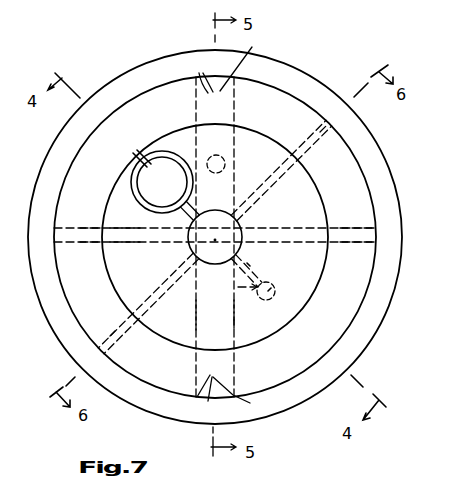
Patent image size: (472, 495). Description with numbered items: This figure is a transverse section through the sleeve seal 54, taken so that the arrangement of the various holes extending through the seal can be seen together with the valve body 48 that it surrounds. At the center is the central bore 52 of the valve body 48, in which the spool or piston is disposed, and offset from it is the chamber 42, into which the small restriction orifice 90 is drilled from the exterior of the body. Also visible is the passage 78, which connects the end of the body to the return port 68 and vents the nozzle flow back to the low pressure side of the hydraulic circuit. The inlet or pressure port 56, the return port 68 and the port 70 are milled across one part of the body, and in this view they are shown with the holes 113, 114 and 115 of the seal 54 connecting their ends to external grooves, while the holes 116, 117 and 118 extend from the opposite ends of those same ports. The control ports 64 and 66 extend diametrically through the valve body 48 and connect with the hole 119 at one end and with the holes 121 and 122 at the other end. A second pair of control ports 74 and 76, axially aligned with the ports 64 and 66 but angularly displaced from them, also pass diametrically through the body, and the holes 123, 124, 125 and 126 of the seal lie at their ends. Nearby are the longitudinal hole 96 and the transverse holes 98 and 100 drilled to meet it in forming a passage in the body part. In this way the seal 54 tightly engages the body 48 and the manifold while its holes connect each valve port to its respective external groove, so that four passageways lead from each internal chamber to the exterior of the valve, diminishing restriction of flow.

The chamber 42 is at (172, 185).
The valve body 48 is at (324, 295).
The central bore 52 is at (227, 234).
The sleeve seal 54 is at (408, 270).
The inlet or pressure port 56 is at (215, 306).
The control port 64 is at (125, 234).
The control port 66 is at (125, 258).
The return port 68 is at (219, 308).
The port 70 is at (219, 322).
The control port 74 is at (279, 175).
The control port 76 is at (295, 185).
The passage 78 is at (217, 156).
The restriction orifice 90 is at (136, 154).
The longitudinal hole 96 is at (271, 288).
The transverse hole 98 is at (257, 269).
The transverse hole 100 is at (253, 295).
The hole 113 is at (197, 397).
The hole 114 is at (222, 398).
The hole 115 is at (246, 399).
The hole 116 is at (196, 75).
The hole 117 is at (193, 74).
The hole 118 is at (97, 243).
The hole 119 is at (84, 258).
The hole 121 is at (358, 229).
The hole 122 is at (386, 226).
The hole 123 is at (120, 314).
The hole 124 is at (117, 316).
The hole 125 is at (307, 143).
The hole 126 is at (333, 156).